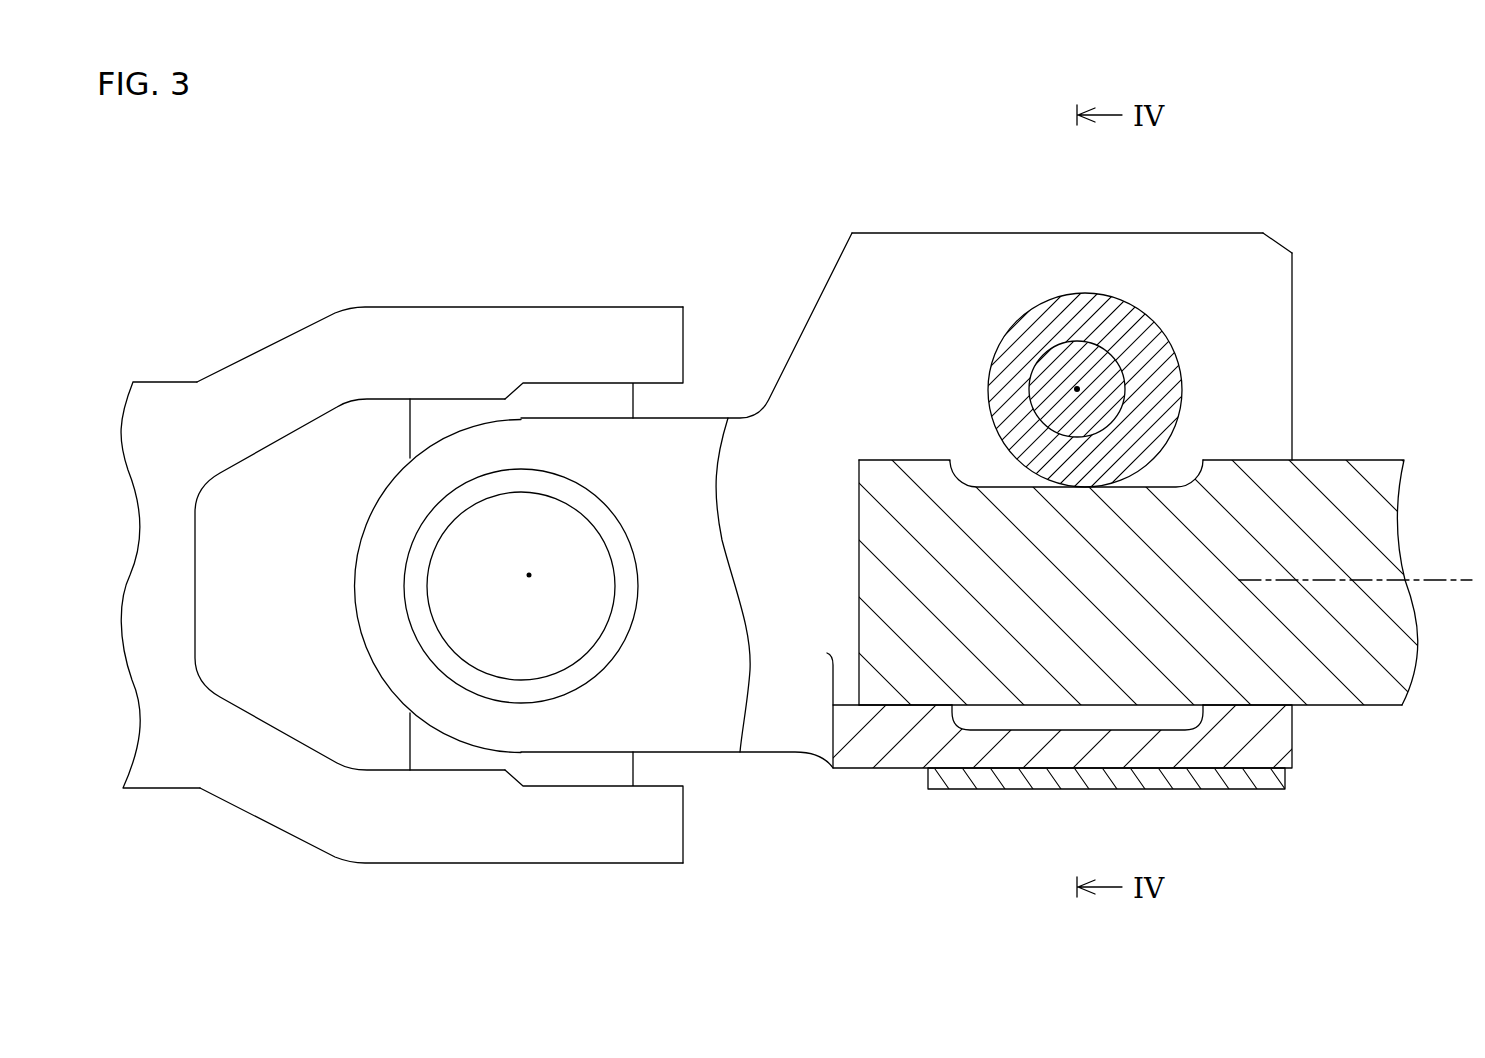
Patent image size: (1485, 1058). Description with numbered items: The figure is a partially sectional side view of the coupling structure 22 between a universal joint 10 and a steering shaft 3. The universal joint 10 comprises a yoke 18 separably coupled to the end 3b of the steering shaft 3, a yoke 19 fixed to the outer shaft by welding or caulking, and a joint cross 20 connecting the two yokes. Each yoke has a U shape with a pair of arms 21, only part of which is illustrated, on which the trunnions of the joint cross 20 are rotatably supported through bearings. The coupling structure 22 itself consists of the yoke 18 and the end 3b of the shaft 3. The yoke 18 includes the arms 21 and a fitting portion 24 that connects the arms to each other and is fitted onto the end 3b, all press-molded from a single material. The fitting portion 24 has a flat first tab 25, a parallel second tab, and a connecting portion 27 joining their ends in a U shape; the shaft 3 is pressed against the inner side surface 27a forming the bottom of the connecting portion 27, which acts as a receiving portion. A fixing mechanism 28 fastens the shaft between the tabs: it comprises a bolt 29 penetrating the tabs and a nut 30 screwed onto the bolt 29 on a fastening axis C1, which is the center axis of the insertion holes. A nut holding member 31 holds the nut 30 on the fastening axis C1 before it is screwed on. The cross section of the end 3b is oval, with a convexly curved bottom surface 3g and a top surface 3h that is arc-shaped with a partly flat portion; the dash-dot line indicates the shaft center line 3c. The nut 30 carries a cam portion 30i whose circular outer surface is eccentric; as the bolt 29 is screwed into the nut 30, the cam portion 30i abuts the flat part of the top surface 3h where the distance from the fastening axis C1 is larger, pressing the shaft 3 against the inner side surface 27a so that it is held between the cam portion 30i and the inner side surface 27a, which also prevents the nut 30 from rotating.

The universal joint 10 is at (540, 253).
The yoke 19 is at (279, 329).
The arms 21 is at (445, 328).
The joint cross 20 is at (592, 395).
The yoke 18 is at (790, 334).
The fitting portion 24 is at (929, 218).
The fixing mechanism 28 is at (1196, 270).
The first tab 25 is at (1276, 336).
The nut 30 is at (1063, 300).
The cam portion 30i is at (1183, 366).
The bolt 29 is at (1090, 355).
The fastening axis C1 is at (1077, 389).
The steering shaft 3 is at (1380, 443).
The top surface 3h is at (886, 460).
The end of the steering shaft 3b is at (1322, 485).
The bottom surface 3g is at (864, 720).
The center line 3c is at (1437, 578).
The coupling structure 22 is at (928, 824).
The connecting portion 27 is at (1282, 744).
The inner side surface 27a is at (1280, 688).
The nut holding member 31 is at (1238, 804).